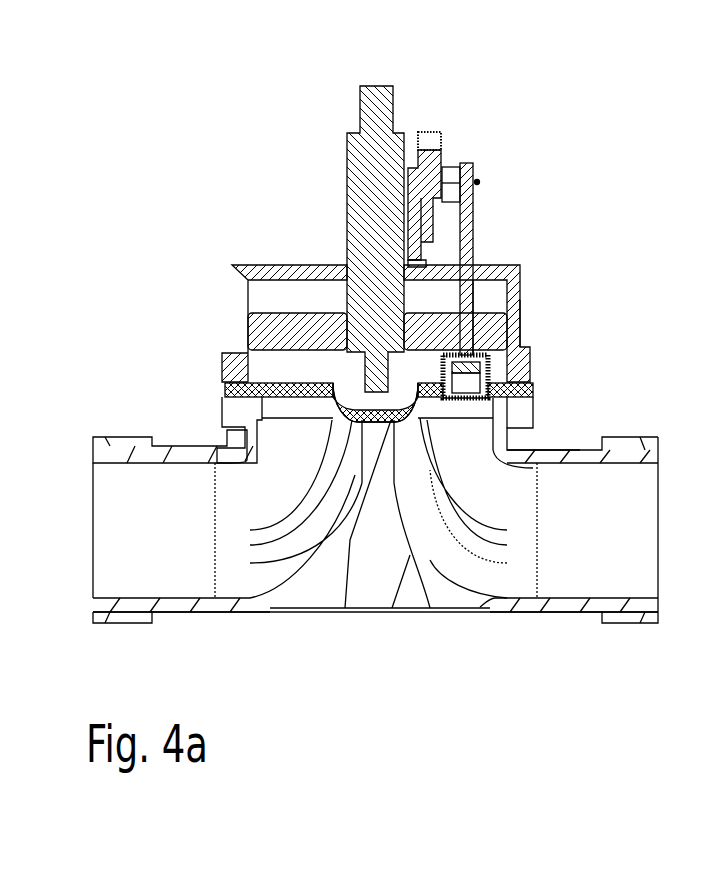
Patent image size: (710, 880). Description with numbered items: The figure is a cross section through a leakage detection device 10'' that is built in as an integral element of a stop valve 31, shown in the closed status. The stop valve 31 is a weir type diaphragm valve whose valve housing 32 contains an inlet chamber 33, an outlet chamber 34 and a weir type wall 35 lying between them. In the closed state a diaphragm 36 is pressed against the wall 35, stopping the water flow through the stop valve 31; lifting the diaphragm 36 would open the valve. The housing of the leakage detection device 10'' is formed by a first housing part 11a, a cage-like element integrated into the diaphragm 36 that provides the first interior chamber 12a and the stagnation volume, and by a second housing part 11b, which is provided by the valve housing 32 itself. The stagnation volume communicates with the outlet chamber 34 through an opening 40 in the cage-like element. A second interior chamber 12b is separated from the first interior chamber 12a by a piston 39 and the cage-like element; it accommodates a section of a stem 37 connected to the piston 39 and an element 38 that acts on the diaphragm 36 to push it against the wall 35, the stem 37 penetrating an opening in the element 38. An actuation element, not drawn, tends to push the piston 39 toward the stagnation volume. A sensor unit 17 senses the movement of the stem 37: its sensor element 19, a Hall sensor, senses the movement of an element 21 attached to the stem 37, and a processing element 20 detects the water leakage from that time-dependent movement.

The leakage detection device 10'' is at (543, 108).
The first housing part 11a is at (417, 410).
The second housing part 11b is at (512, 303).
The first interior chamber 12a is at (463, 400).
The second interior chamber 12b is at (347, 265).
The sensor unit 17 is at (452, 140).
The sensor element 19 is at (413, 184).
The processing element 20 is at (428, 132).
The element 21 is at (452, 190).
The stop valve 31 is at (561, 416).
The valve housing 32 is at (230, 417).
The inlet chamber 33 is at (120, 497).
The outlet chamber 34 is at (632, 513).
The wall 35 is at (373, 583).
The diaphragm 36 is at (235, 388).
The stem 37 is at (466, 240).
The element 38 is at (268, 333).
The piston 39 is at (488, 357).
The opening 40 is at (478, 305).